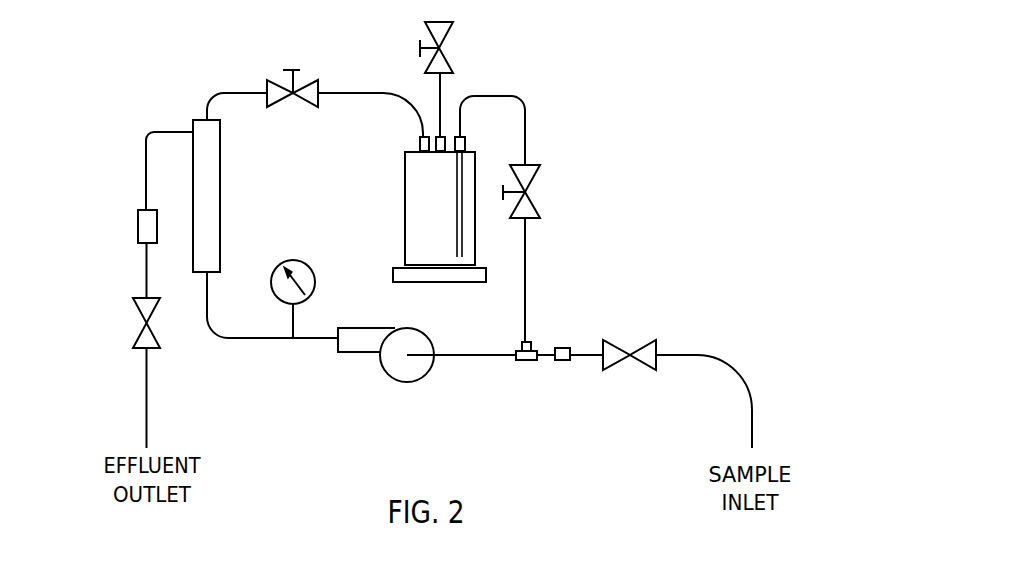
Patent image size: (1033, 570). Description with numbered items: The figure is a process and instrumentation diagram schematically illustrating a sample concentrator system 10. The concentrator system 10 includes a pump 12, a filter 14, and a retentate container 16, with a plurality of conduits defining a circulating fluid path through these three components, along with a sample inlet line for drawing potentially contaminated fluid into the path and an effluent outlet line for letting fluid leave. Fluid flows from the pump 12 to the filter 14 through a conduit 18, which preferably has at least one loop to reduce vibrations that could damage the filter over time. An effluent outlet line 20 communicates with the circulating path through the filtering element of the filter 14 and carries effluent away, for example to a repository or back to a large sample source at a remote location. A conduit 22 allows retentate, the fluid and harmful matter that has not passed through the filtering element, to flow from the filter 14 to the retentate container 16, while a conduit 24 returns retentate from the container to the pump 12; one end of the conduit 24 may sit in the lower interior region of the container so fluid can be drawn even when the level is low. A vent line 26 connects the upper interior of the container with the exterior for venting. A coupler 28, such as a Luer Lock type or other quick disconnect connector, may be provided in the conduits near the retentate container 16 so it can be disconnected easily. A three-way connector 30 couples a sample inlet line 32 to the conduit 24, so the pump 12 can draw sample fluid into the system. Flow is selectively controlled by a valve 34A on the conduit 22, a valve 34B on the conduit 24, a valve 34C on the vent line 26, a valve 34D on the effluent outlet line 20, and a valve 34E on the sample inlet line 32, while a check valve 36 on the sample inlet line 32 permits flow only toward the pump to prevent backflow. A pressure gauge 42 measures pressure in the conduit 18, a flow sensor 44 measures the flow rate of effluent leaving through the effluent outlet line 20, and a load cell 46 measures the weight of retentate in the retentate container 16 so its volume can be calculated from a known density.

The sample concentrator system 10 is at (642, 98).
The pump 12 is at (390, 365).
The filter 14 is at (207, 222).
The retentate container 16 is at (415, 203).
The conduit 18 is at (243, 340).
The effluent outlet line 20 is at (146, 165).
The conduit 22 is at (235, 94).
The conduit 24 is at (500, 96).
The vent line 26 is at (441, 95).
The coupler 28 is at (438, 152).
The three-way connector 30 is at (531, 361).
The sample inlet line 32 is at (690, 352).
The valve 34A is at (288, 103).
The valve 34B is at (540, 180).
The valve 34C is at (452, 32).
The valve 34D is at (138, 315).
The valve 34E is at (638, 368).
The check valve 36 is at (560, 345).
The pressure gauge 42 is at (307, 262).
The flow sensor 44 is at (138, 226).
The load cell 46 is at (440, 275).